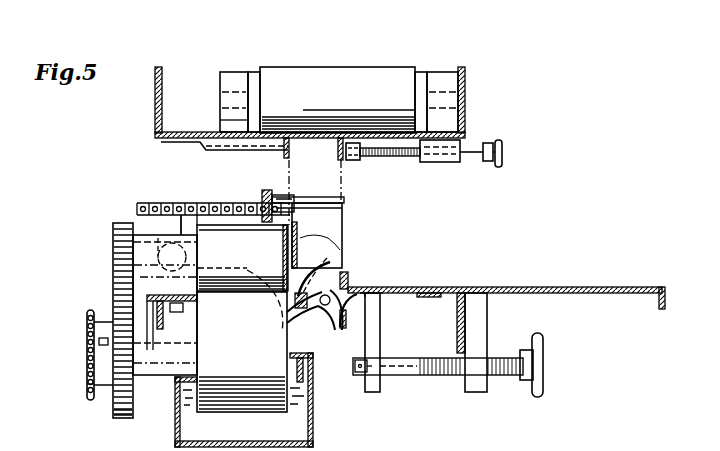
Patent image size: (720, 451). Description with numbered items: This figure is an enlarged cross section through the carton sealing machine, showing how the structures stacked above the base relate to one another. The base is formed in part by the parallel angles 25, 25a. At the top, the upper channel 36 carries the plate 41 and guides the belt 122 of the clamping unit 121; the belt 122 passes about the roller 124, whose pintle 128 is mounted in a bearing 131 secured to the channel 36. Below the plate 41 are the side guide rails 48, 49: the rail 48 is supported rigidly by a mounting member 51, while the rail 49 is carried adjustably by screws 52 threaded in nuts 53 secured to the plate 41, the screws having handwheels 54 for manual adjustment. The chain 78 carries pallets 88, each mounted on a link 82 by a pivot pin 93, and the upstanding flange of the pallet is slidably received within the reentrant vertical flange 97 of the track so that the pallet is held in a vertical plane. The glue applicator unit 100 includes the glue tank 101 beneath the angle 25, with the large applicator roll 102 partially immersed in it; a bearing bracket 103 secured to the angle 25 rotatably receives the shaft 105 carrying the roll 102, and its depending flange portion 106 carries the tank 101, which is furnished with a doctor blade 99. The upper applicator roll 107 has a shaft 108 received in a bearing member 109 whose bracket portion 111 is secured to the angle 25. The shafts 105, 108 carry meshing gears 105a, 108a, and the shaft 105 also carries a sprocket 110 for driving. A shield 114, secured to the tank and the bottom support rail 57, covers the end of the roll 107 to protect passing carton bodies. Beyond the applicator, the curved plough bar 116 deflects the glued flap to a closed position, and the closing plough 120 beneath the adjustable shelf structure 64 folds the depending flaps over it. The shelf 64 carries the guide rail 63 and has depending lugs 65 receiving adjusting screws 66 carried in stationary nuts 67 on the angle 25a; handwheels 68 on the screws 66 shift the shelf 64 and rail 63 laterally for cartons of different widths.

The clamping unit 121 is at (376, 50).
The belt 122 is at (337, 100).
The roller 124 is at (250, 71).
The pintle 128 is at (230, 92).
The bearing 131 is at (220, 112).
The channel 36 is at (463, 90).
The plate 41 is at (460, 137).
The mounting member 51 is at (161, 148).
The side guide rail 48 is at (283, 158).
The side guide rail 49 is at (341, 160).
The nut 53 is at (440, 164).
The screw 52 is at (475, 152).
The handwheel 54 is at (500, 153).
The chain 78 is at (143, 199).
The reentrant vertical flange 97 is at (243, 200).
The link 82 is at (266, 193).
The pivot pin 93 is at (286, 196).
The pallet 88 is at (342, 232).
The shield 114 is at (300, 243).
The upper applicator roll 107 is at (242, 278).
The shaft 108 is at (158, 238).
The bearing member 109 is at (130, 242).
The glue applicator unit 100 is at (108, 254).
The gear 108a is at (112, 260).
The bracket portion 111 is at (140, 277).
The angle 25 is at (157, 300).
The shaft 105 is at (87, 346).
The sprocket 110 is at (88, 386).
The gear 105a is at (125, 420).
The bearing bracket 103 is at (157, 372).
The applicator roll 102 is at (242, 352).
The glue tank 101 is at (313, 432).
The depending flange portion 106 is at (178, 426).
The doctor blade 99 is at (308, 380).
The bottom support rail 57 is at (327, 264).
The plough bar 116 is at (310, 328).
The guide rail 63 is at (349, 277).
The closing plough 120 is at (352, 335).
The angle 25a is at (432, 291).
The adjustable shelf structure 64 is at (659, 288).
The depending lug 65 is at (376, 328).
The stationary nut 67 is at (482, 320).
The adjusting screw 66 is at (436, 376).
The handwheel 68 is at (543, 372).